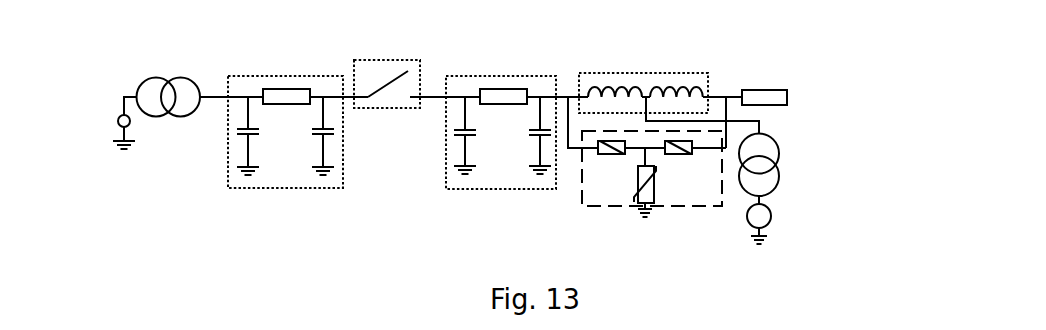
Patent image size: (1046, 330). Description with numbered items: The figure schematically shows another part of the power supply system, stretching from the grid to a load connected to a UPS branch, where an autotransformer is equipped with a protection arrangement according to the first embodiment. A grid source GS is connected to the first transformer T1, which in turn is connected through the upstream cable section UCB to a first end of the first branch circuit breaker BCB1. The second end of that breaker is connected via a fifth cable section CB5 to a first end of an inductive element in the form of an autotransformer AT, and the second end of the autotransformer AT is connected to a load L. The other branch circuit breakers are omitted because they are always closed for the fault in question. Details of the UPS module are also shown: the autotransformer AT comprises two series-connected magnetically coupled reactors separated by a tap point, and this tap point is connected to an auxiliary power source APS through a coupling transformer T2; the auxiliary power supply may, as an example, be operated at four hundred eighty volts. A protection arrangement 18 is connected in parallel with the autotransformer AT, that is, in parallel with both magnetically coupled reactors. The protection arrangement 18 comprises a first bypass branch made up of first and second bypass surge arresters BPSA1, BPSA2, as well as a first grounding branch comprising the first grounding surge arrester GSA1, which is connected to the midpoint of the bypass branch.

The grid source GS is at (109, 122).
The first transformer T1 is at (169, 82).
The upstream cable section UCB is at (285, 111).
The first branch circuit breaker BCB1 is at (386, 63).
The fifth cable section CB5 is at (501, 114).
The protection arrangement 18 is at (585, 132).
The autotransformer AT is at (643, 71).
The load L is at (764, 82).
The coupling transformer T2 is at (778, 165).
The auxiliary power source APS is at (794, 220).
The first bypass surge arrester BPSA1 is at (611, 153).
The second bypass surge arrester BPSA2 is at (687, 153).
The first grounding surge arrester GSA1 is at (644, 219).